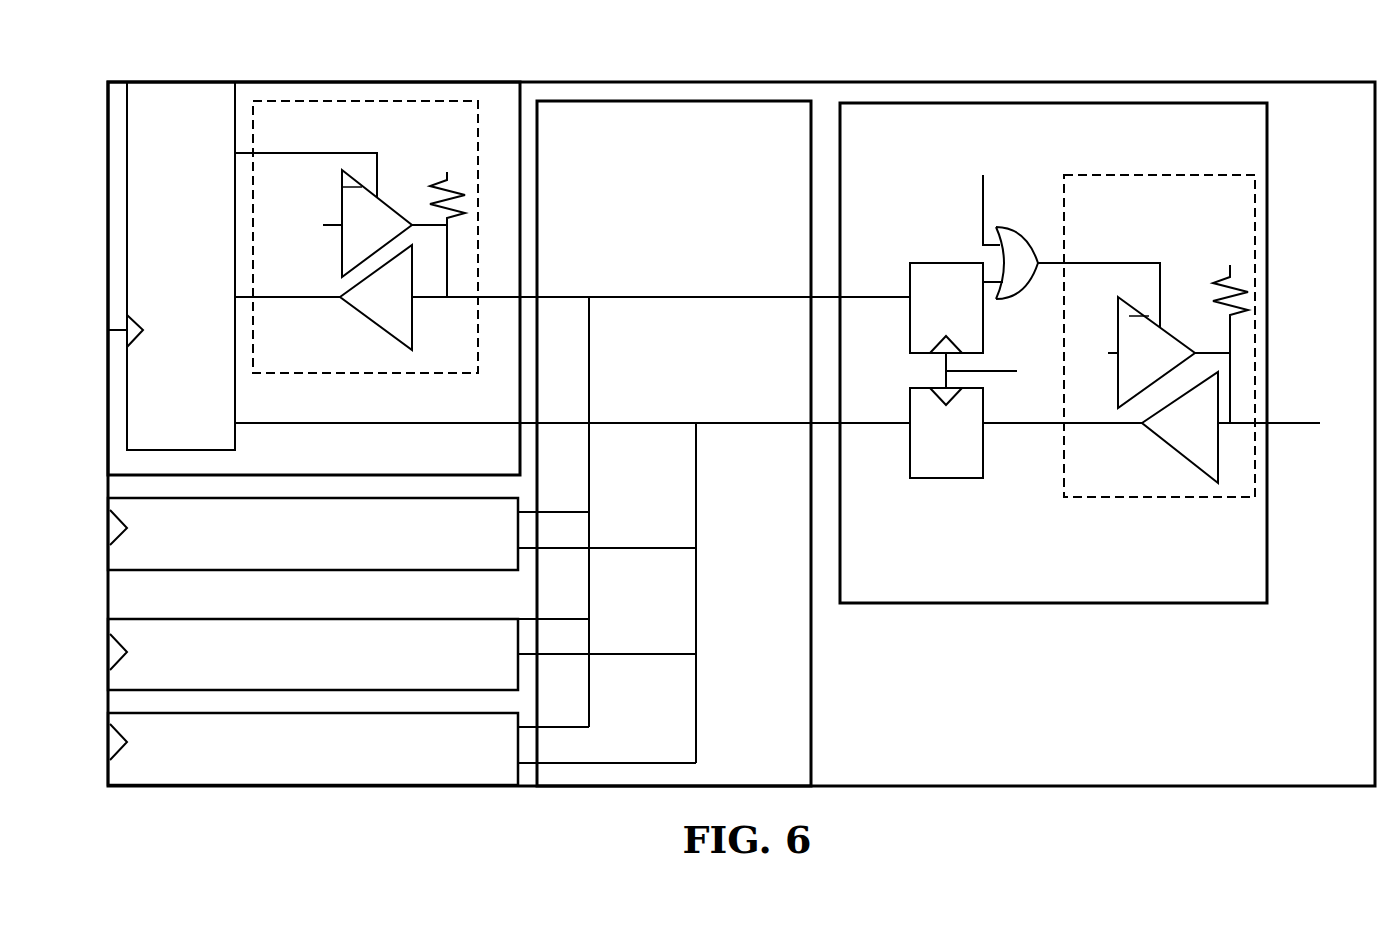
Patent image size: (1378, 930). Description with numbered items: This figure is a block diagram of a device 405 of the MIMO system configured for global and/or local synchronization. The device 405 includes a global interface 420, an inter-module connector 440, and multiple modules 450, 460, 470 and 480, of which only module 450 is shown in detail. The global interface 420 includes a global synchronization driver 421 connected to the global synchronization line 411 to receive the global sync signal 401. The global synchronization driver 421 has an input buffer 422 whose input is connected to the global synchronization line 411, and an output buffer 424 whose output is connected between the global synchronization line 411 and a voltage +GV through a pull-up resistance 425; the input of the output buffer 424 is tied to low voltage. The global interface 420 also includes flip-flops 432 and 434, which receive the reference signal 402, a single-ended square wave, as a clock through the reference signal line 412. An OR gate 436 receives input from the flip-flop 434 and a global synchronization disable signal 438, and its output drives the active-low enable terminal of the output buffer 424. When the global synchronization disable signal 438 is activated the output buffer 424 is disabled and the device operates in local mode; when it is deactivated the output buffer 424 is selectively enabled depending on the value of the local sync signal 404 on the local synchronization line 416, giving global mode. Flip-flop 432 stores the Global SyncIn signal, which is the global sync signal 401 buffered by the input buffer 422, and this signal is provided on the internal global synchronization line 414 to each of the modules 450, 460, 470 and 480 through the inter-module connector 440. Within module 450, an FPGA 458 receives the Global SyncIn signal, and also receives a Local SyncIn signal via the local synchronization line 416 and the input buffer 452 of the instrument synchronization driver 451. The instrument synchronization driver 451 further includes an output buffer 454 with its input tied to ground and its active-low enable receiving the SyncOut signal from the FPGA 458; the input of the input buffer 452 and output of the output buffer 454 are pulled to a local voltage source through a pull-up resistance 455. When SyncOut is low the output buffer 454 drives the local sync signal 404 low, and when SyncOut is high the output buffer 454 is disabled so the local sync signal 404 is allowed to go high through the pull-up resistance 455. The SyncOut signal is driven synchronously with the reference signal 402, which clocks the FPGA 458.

The device 405 is at (753, 52).
The module 450 is at (314, 278).
The field-programmable gate array 458 is at (181, 266).
The reference signal 402 is at (566, 351).
The instrument synchronization driver 451 is at (365, 237).
The output buffer 454 is at (341, 225).
The pull-up resistance 455 is at (435, 173).
The input buffer 452 is at (323, 297).
The local sync signal 404 is at (661, 285).
The local synchronization line 416 is at (579, 512).
The internal global synchronization line 414 is at (572, 593).
The module 460 is at (313, 534).
The module 470 is at (313, 654).
The module 480 is at (313, 749).
The inter-module connector 440 is at (672, 443).
The global interface 420 is at (1053, 353).
The global synchronization disable signal 438 is at (995, 184).
The OR gate 436 is at (1071, 265).
The flip-flop 434 is at (946, 308).
The reference signal line 412 is at (989, 367).
The flip-flop 432 is at (946, 433).
The global synchronization driver 421 is at (1159, 336).
The output buffer 424 is at (1158, 360).
The pull-up resistance 425 is at (1211, 291).
The input buffer 422 is at (1100, 427).
The global synchronization line 411 is at (1269, 413).
The global sync signal 401 is at (1318, 431).